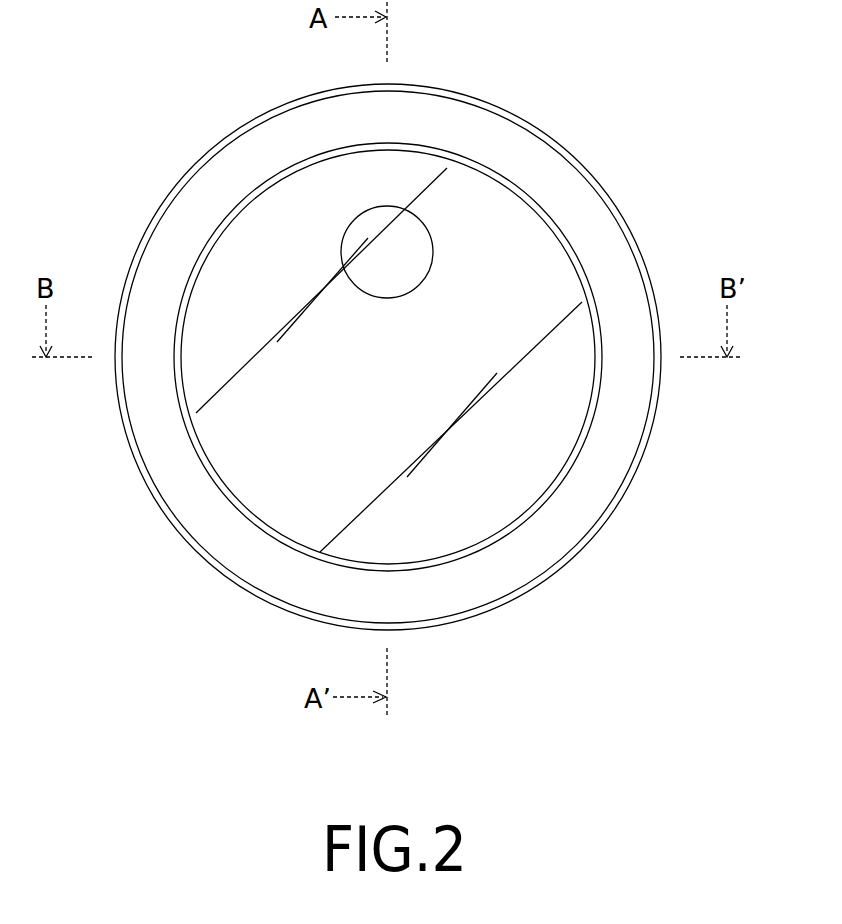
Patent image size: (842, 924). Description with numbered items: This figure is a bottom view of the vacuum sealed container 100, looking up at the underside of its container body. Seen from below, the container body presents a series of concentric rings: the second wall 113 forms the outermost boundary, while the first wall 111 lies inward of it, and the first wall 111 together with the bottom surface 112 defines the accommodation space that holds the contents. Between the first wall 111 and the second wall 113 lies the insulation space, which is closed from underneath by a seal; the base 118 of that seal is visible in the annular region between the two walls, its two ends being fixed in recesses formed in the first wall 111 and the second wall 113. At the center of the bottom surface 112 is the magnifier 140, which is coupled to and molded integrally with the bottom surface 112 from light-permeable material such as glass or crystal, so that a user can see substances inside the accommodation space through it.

The vacuum sealed container 100 is at (790, 747).
The first wall 111 is at (593, 423).
The bottom surface 112 is at (538, 243).
The second wall 113 is at (567, 560).
The base 118 is at (593, 480).
The magnifier 140 is at (428, 217).